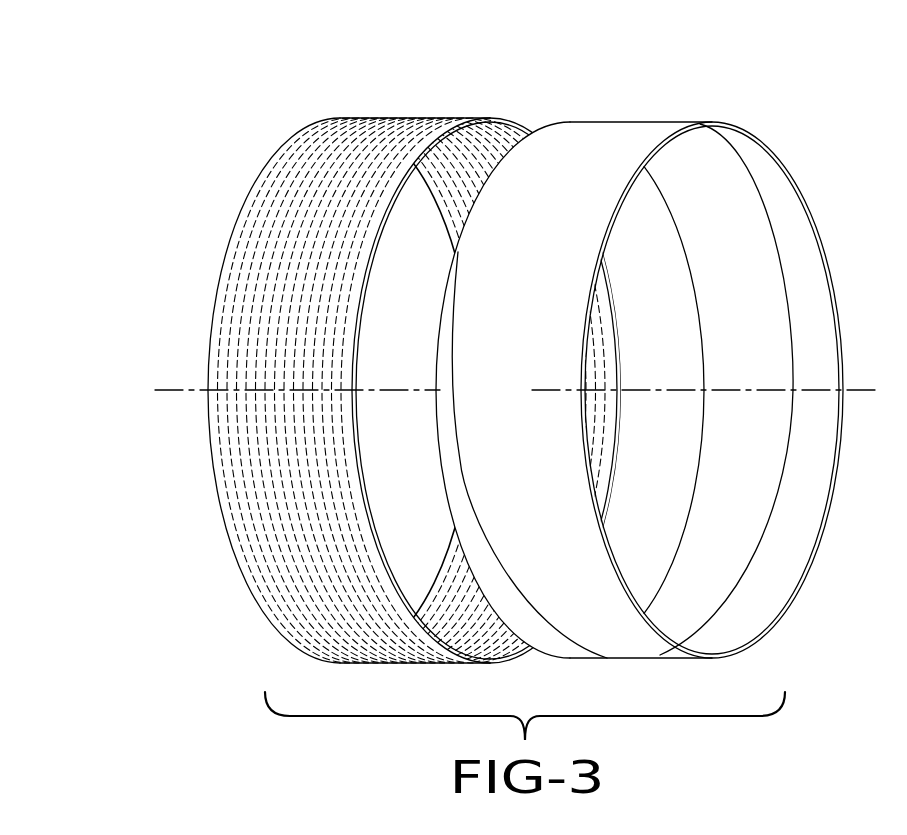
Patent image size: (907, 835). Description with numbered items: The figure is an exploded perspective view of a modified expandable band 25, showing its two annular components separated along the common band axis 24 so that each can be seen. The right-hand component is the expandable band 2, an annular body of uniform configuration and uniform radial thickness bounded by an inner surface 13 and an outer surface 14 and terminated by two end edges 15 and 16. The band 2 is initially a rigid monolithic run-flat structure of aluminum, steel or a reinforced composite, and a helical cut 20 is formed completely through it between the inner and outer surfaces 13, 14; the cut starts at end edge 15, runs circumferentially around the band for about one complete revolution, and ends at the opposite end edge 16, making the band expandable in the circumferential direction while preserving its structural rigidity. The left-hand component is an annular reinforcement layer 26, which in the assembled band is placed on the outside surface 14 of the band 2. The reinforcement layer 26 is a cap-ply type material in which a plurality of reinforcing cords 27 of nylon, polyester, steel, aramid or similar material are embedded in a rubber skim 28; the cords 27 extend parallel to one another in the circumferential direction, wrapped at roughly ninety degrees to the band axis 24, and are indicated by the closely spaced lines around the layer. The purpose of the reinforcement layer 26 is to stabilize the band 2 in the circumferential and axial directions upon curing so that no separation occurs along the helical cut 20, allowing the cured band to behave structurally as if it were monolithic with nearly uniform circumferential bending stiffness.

The expandable band 2 is at (669, 359).
The inner surface 13 is at (812, 276).
The outer surface 14 is at (596, 136).
The end edge 15 is at (793, 176).
The end edge 16 is at (683, 541).
The helical cut 20 is at (778, 228).
The band axis 24 is at (157, 386).
The modified expandable band 25 is at (525, 377).
The annular reinforcement layer 26 is at (414, 357).
The reinforcing cords 27 is at (327, 140).
The rubber skim 28 is at (310, 177).